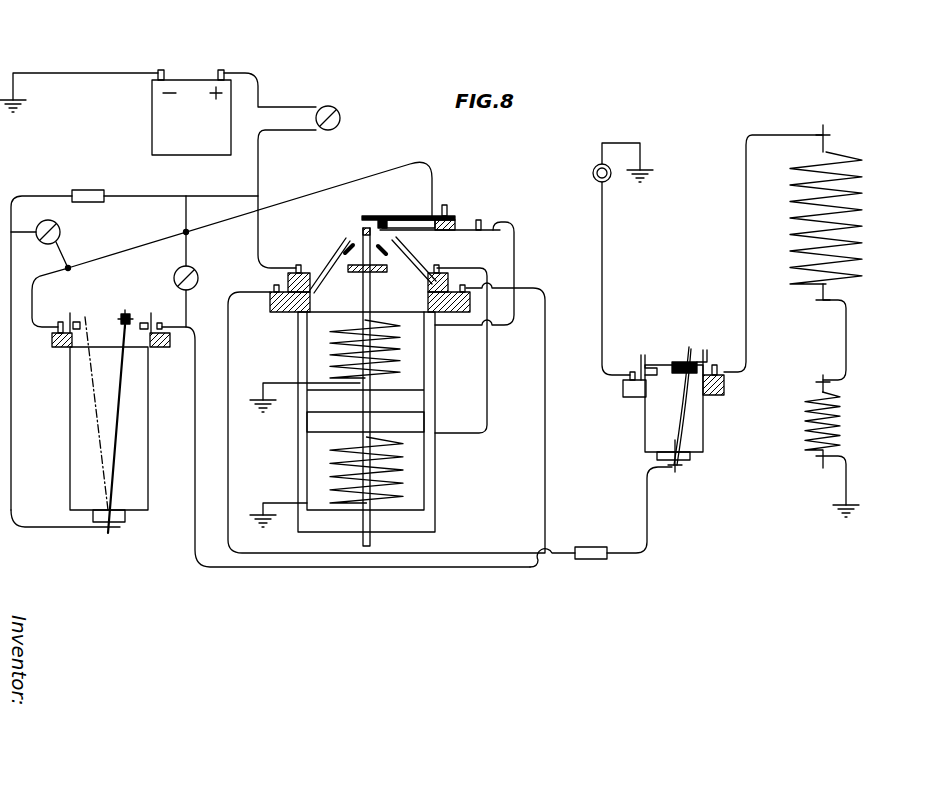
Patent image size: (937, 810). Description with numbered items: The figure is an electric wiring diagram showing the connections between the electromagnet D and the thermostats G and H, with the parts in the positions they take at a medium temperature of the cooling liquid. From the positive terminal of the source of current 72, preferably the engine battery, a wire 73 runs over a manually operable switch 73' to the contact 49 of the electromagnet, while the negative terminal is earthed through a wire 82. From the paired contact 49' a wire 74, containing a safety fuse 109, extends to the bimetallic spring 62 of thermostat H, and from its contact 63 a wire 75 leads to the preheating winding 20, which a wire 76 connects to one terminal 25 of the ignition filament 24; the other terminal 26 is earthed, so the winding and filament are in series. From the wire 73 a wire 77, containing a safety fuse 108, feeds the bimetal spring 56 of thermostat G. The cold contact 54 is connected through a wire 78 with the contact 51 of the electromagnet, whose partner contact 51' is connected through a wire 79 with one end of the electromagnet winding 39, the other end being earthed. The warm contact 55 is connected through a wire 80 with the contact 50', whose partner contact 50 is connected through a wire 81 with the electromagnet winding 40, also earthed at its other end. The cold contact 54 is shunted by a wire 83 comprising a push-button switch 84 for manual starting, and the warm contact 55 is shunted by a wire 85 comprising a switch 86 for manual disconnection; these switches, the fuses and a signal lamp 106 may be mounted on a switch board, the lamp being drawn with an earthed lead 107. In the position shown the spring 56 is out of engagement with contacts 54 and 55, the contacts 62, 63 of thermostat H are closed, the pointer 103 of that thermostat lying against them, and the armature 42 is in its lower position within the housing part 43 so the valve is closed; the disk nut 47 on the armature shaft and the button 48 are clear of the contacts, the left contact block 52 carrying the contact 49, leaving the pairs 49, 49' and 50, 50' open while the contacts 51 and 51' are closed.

The preheating winding 20 is at (862, 222).
The ignition filament 24 is at (832, 426).
The terminal of the ignition filament 25 is at (838, 388).
The terminal of the ignition filament 26 is at (848, 475).
The electromagnet winding 39 is at (400, 350).
The electromagnet winding 40 is at (395, 465).
The armature 42 is at (418, 425).
The chamber partition 43 is at (367, 395).
The disk nut 47 is at (371, 280).
The button 48 is at (362, 230).
The contact 49 is at (320, 260).
The contact 49' is at (340, 283).
The contact 50 is at (431, 264).
The contact 50' is at (434, 296).
The contact 51 is at (431, 205).
The contact 51' is at (437, 238).
The contact block 52 is at (350, 300).
The cold contact 54 is at (75, 327).
The warm contact 55 is at (145, 322).
The bimetal spring 56 is at (112, 462).
The bimetallic spring 62 is at (673, 366).
The contact 63 is at (714, 358).
The source of current 72 is at (152, 112).
The wire 73 is at (270, 165).
The manually operable switch 73' is at (345, 102).
The wire 74 is at (228, 322).
The wire 75 is at (746, 240).
The wire 76 is at (848, 345).
The wire 77 is at (124, 188).
The wire 78 is at (178, 234).
The wire 79 is at (514, 262).
The wire 80 is at (414, 568).
The wire 81 is at (489, 384).
The wire 82 is at (66, 73).
The wire 83 is at (57, 256).
The manually operable switch 84 is at (60, 235).
The wire 85 is at (190, 296).
The switch 86 is at (190, 268).
The meter pointer 103 is at (689, 345).
The signal lamp 106 is at (593, 172).
The conductor 107 is at (603, 258).
The safety fuse 108 is at (78, 190).
The safety fuse 109 is at (594, 560).